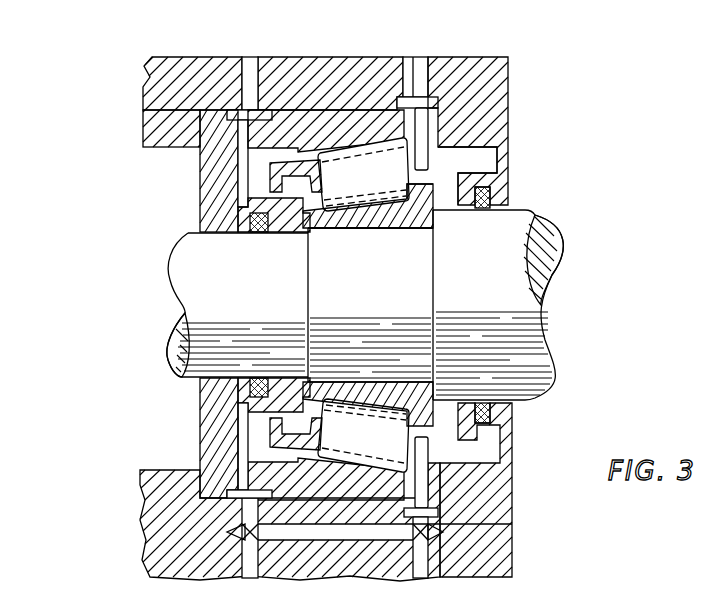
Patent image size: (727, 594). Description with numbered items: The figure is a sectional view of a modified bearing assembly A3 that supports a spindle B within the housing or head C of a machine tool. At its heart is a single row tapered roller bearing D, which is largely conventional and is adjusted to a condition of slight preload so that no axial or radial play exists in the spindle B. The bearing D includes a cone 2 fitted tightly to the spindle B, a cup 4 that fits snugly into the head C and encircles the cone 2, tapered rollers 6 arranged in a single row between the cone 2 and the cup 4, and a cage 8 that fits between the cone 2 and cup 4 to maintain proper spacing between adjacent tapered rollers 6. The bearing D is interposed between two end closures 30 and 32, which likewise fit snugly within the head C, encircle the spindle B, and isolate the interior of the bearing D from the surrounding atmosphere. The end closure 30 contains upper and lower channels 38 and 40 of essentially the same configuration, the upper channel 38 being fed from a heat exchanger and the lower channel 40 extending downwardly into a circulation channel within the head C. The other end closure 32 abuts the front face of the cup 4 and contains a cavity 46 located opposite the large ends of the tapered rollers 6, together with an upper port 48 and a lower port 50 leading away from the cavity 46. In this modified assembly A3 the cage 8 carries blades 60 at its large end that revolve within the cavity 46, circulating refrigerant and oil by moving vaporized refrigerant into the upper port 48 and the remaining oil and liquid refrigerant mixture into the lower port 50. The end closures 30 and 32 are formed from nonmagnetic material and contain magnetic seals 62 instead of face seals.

The cone 2 is at (384, 393).
The cup 4 is at (330, 125).
The tapered rollers 6 is at (374, 216).
The cage 8 is at (427, 467).
The end closure 30 is at (220, 156).
The end closure 32 is at (504, 88).
The upper channel 38 is at (245, 192).
The lower channel 40 is at (240, 440).
The cavity 46 is at (441, 168).
The upper port 48 is at (420, 68).
The lower port 50 is at (423, 517).
The blades 60 is at (426, 124).
The magnetic seals 62 is at (256, 234).
The modified bearing assembly A3 is at (196, 418).
The spindle B is at (390, 303).
The housing or head C is at (222, 55).
The single row tapered roller bearing D is at (398, 232).